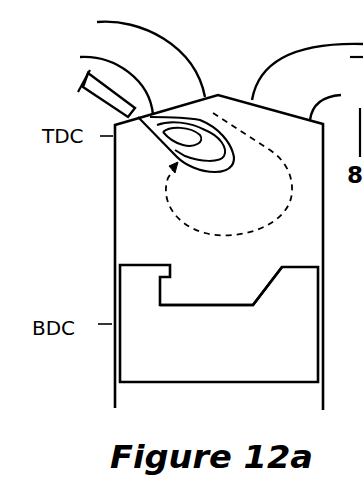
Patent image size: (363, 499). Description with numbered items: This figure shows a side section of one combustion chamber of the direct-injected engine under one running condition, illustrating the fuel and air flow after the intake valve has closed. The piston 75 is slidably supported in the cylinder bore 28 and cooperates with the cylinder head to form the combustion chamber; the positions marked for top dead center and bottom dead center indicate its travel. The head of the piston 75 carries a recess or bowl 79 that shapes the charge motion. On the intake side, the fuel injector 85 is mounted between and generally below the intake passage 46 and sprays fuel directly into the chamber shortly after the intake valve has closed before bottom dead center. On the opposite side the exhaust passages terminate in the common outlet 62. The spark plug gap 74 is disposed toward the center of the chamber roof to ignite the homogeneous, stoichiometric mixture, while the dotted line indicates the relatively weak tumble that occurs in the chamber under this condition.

The cylinder bore 28 is at (115, 228).
The intake passage 46 is at (160, 63).
The common outlet 62 is at (317, 89).
The spark plug gap 74 is at (222, 104).
The piston 75 is at (307, 325).
The bowl 79 is at (222, 287).
The fuel injector 85 is at (80, 90).